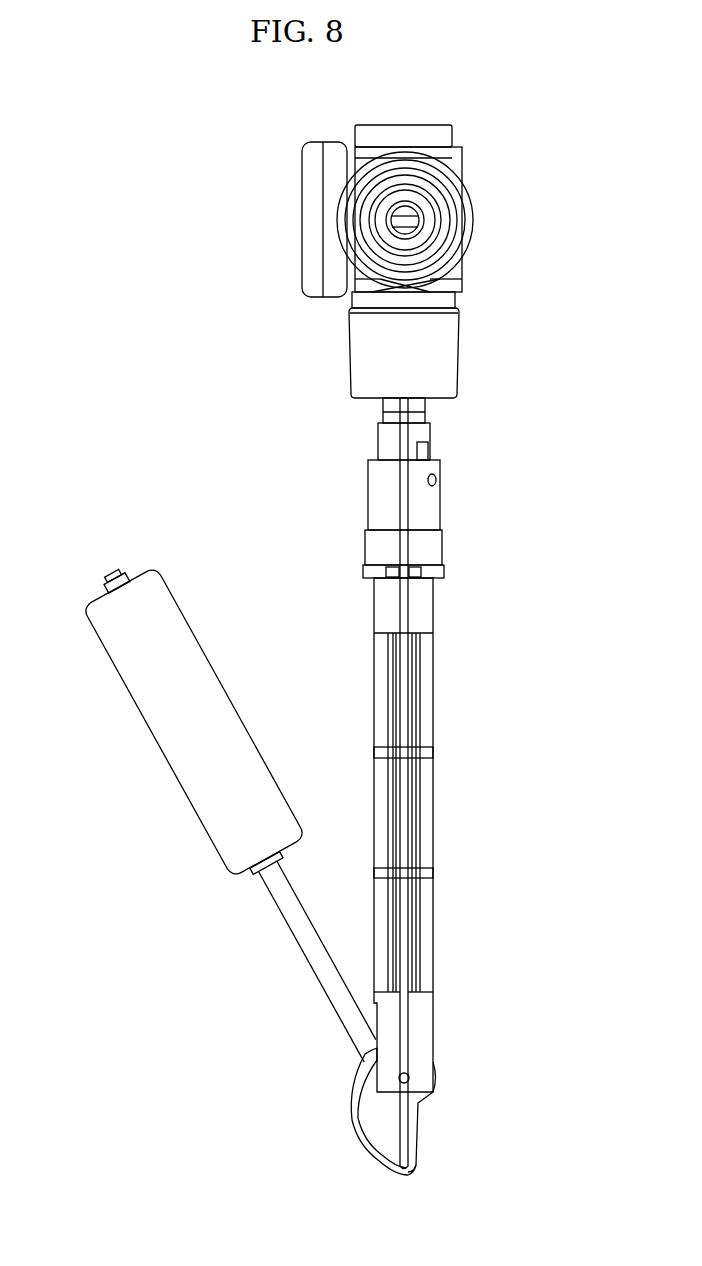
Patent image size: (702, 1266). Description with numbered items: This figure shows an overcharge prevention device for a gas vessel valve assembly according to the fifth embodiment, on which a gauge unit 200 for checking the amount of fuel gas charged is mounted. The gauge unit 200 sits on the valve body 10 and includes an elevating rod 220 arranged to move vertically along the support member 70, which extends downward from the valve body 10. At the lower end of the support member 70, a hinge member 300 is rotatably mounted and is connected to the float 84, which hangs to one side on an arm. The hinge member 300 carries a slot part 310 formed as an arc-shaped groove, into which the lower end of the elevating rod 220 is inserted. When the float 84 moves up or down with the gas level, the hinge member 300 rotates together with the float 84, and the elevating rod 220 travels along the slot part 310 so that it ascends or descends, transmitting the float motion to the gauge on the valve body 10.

The gauge unit 200 is at (308, 265).
The valve body 10 is at (450, 355).
The elevating rod 220 is at (407, 612).
The support member 70 is at (412, 1020).
The hinge member 300 is at (416, 1108).
The slot part 310 is at (373, 1122).
The float 84 is at (213, 695).